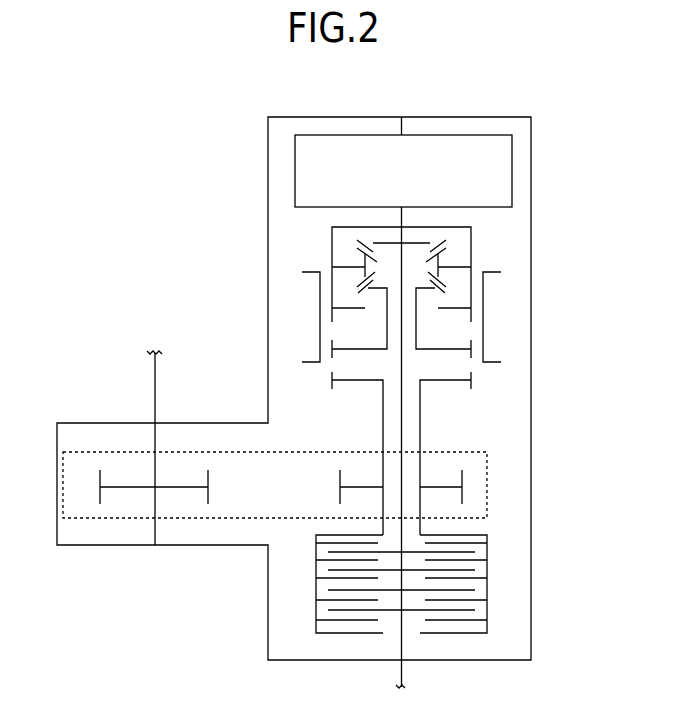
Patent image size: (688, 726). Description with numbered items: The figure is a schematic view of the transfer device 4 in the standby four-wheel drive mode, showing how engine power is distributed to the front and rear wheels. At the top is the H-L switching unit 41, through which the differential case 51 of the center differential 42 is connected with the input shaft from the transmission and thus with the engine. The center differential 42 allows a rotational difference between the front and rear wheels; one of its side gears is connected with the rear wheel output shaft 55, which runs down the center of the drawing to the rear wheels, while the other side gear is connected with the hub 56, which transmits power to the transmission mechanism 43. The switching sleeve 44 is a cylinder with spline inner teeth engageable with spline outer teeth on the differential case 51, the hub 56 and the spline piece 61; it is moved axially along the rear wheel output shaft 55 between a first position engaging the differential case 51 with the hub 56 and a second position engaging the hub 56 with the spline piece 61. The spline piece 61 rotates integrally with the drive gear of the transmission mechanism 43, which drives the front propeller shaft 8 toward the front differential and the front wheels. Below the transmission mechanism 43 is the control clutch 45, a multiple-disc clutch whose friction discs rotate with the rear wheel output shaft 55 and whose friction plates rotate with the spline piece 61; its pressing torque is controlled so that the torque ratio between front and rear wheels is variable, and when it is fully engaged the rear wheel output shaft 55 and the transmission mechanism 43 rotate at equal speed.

The transfer device 4 is at (118, 161).
The front propeller shaft 8 is at (157, 378).
The H-L switching unit 41 is at (450, 134).
The center differential 42 is at (315, 242).
The transmission mechanism 43 is at (339, 440).
The switching sleeve 44 is at (484, 290).
The control clutch 45 is at (488, 563).
The differential case 51 is at (472, 242).
The rear wheel output shaft 55 is at (404, 648).
The hub 56 is at (471, 346).
The spline piece 61 is at (472, 383).